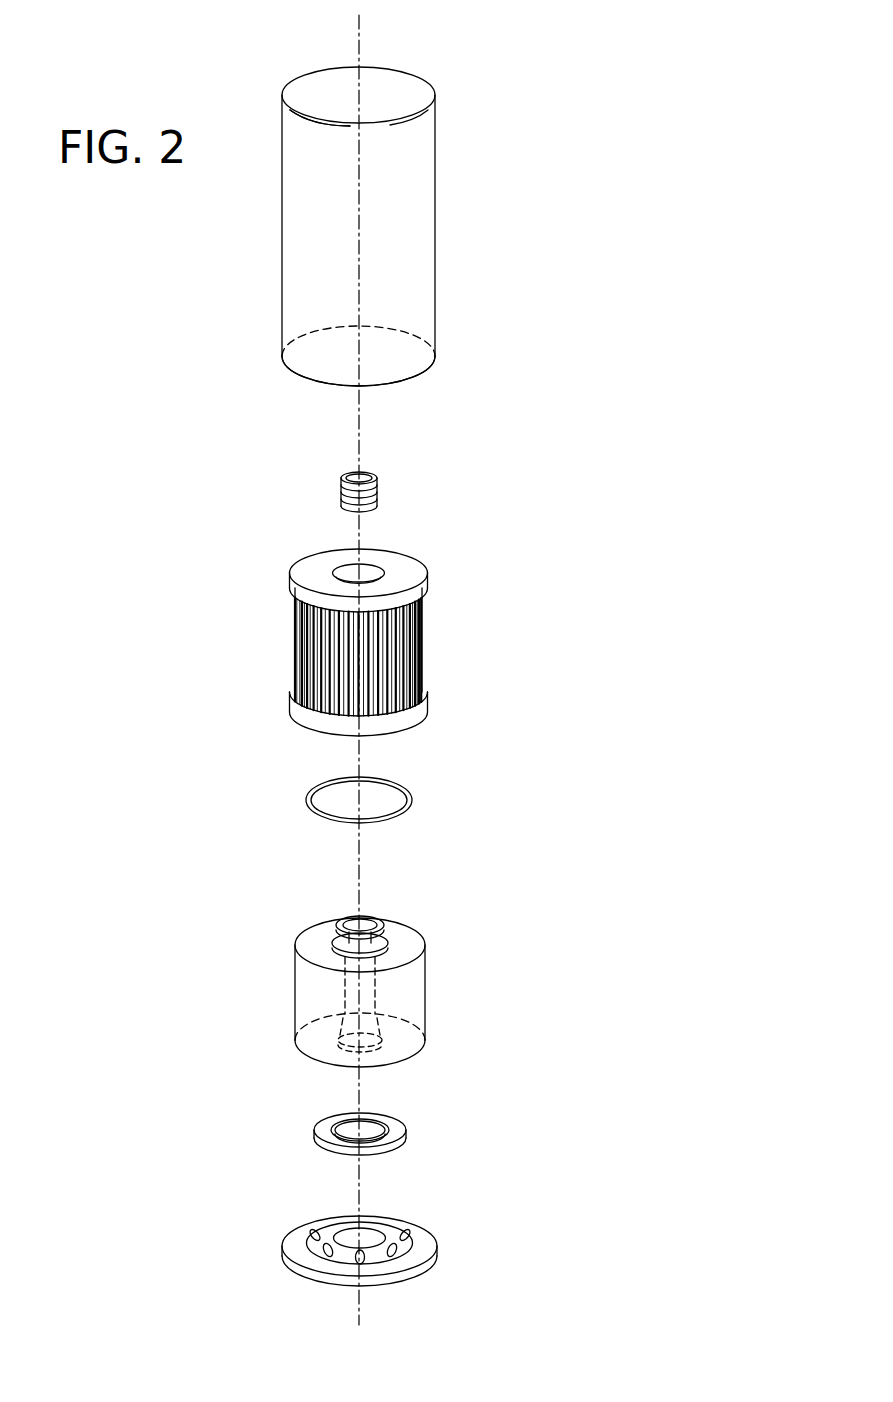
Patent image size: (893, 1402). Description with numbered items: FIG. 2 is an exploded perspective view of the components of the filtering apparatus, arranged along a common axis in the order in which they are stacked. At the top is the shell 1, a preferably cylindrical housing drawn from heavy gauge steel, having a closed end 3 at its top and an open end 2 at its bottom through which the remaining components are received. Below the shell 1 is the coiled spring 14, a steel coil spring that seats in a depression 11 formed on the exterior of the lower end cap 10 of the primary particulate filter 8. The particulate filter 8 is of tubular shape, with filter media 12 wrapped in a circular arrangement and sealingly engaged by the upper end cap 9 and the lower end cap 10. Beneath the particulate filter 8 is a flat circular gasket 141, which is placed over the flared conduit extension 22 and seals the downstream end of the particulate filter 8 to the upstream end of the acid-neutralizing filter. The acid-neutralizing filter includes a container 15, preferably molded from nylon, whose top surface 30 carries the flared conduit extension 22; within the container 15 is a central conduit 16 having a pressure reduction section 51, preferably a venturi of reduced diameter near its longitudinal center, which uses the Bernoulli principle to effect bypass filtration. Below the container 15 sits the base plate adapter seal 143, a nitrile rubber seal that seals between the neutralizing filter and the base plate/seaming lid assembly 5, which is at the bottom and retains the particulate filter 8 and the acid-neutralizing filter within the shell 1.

The shell 1 is at (432, 230).
The open end 2 is at (410, 378).
The closed end 3 is at (422, 95).
The base plate/seaming lid assembly 5 is at (427, 1240).
The primary particulate filter 8 is at (369, 642).
The upper end cap 9 is at (426, 712).
The lower end cap 10 is at (425, 586).
The depression 11 is at (345, 578).
The filter media 12 is at (388, 667).
The coiled spring 14 is at (340, 488).
The acid-neutralizing filter container 15 is at (363, 967).
The central conduit 16 is at (375, 995).
The flared conduit extension 22 is at (348, 922).
The top surface of base member 30 is at (402, 940).
The pressure reduction section 51 is at (345, 983).
The flat circular gasket 141 is at (308, 800).
The base plate adapter seal 143 is at (393, 1134).